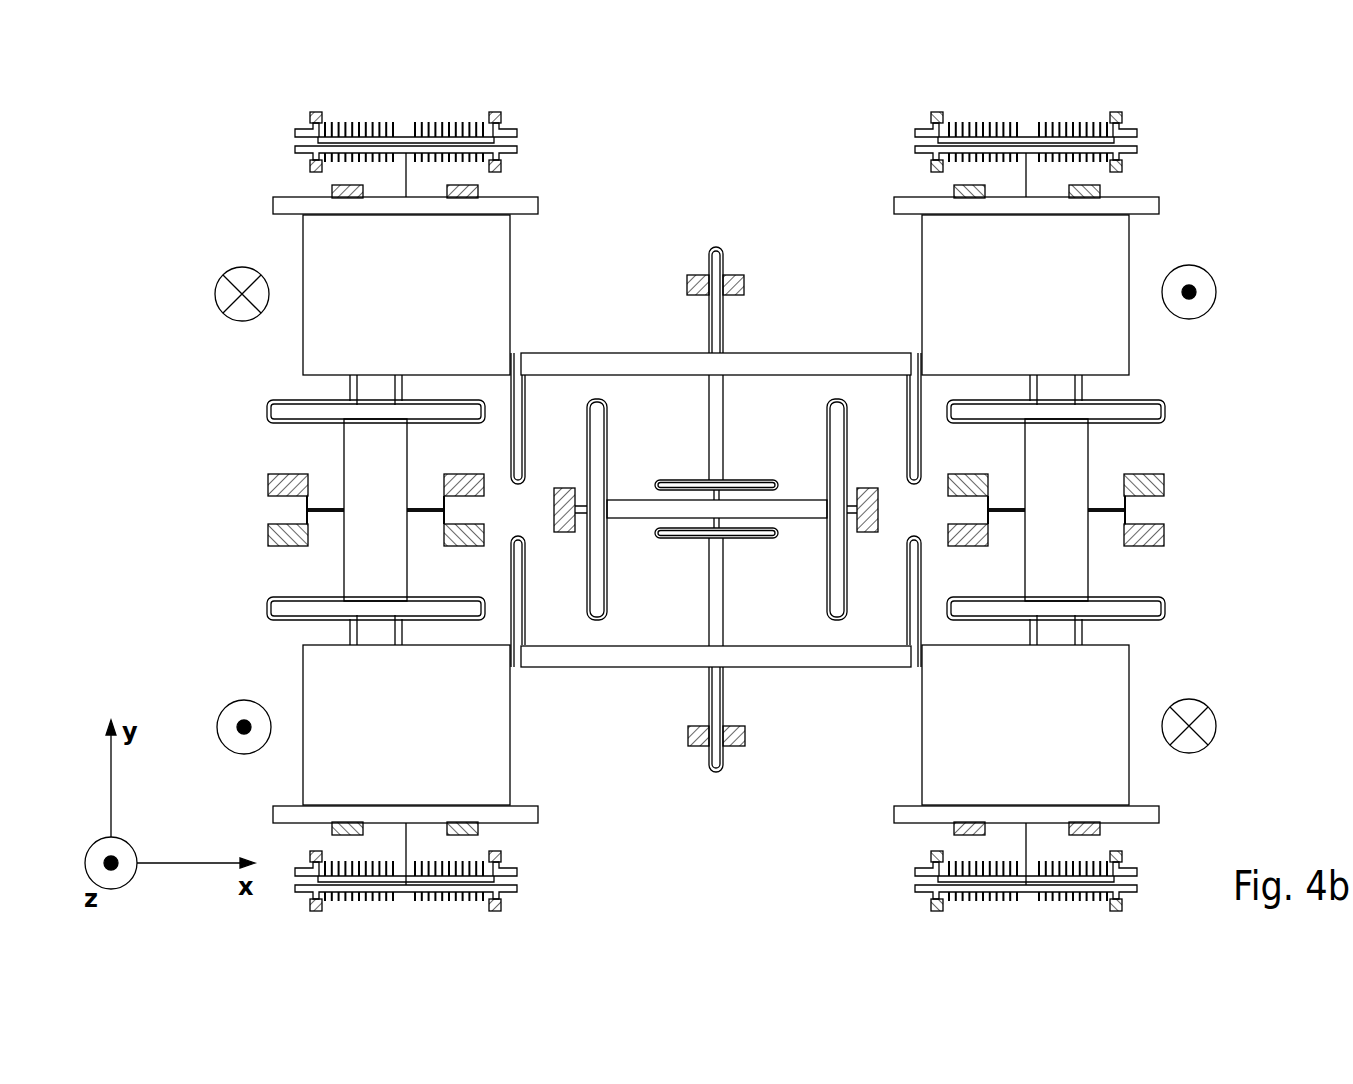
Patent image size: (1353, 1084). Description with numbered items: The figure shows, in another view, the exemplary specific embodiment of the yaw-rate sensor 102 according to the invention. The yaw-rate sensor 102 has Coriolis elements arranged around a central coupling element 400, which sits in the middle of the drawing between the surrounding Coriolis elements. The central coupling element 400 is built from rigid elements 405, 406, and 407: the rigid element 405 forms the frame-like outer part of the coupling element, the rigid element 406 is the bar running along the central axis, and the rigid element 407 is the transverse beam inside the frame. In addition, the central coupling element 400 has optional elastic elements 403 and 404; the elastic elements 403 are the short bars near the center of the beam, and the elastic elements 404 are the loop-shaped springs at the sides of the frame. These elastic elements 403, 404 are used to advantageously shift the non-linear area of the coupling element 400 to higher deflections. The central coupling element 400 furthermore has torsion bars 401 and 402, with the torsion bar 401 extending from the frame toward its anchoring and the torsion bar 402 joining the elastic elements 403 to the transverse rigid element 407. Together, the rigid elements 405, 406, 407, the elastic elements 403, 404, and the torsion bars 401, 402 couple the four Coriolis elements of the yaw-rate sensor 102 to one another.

The yaw-rate sensor 102 is at (188, 170).
The central coupling element 400 is at (747, 235).
The torsion bar 401 is at (718, 320).
The torsion bar 402 is at (720, 497).
The elastic element 403 is at (682, 480).
The elastic element 404 is at (907, 397).
The rigid element 405 is at (588, 353).
The rigid element 406 is at (707, 598).
The rigid element 407 is at (632, 500).